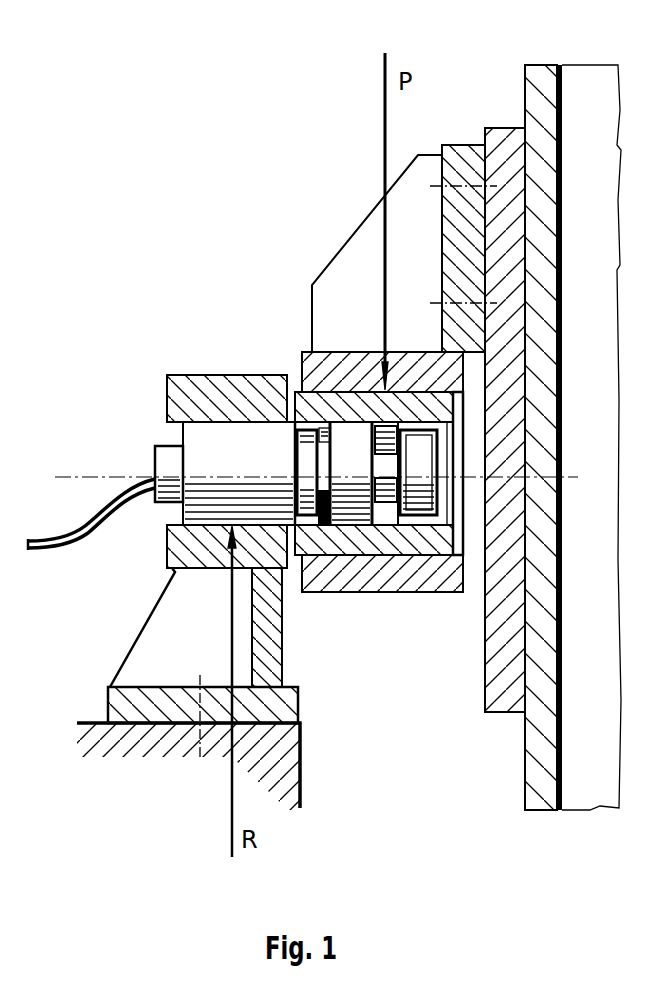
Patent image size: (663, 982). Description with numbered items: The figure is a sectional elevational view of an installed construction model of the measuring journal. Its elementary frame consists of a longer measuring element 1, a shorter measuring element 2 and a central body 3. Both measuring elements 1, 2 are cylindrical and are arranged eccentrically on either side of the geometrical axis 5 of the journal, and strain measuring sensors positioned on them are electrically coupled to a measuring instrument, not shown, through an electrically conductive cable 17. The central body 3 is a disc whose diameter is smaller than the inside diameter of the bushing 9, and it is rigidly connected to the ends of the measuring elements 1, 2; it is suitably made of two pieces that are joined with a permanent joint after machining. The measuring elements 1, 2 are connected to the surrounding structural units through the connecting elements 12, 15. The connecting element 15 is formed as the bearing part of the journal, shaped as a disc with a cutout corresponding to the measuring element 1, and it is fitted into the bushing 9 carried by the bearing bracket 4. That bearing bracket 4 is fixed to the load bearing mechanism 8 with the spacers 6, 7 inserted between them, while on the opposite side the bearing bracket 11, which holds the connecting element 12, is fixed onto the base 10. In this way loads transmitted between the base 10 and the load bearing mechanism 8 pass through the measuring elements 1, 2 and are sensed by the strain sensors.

The longer measuring element 1 is at (330, 545).
The shorter measuring element 2 is at (392, 462).
The central body 3 is at (418, 505).
The bearing bracket 4 is at (352, 256).
The geometrical axis 5 is at (104, 477).
The spacer 6 is at (462, 162).
The spacer 7 is at (506, 150).
The load bearing mechanism 8 is at (546, 80).
The bushing 9 is at (306, 402).
The base 10 is at (175, 742).
The bearing bracket 11 is at (117, 704).
The connecting element 12 is at (183, 510).
The connecting element 15 is at (362, 517).
The electrically conductive cable 17 is at (31, 540).